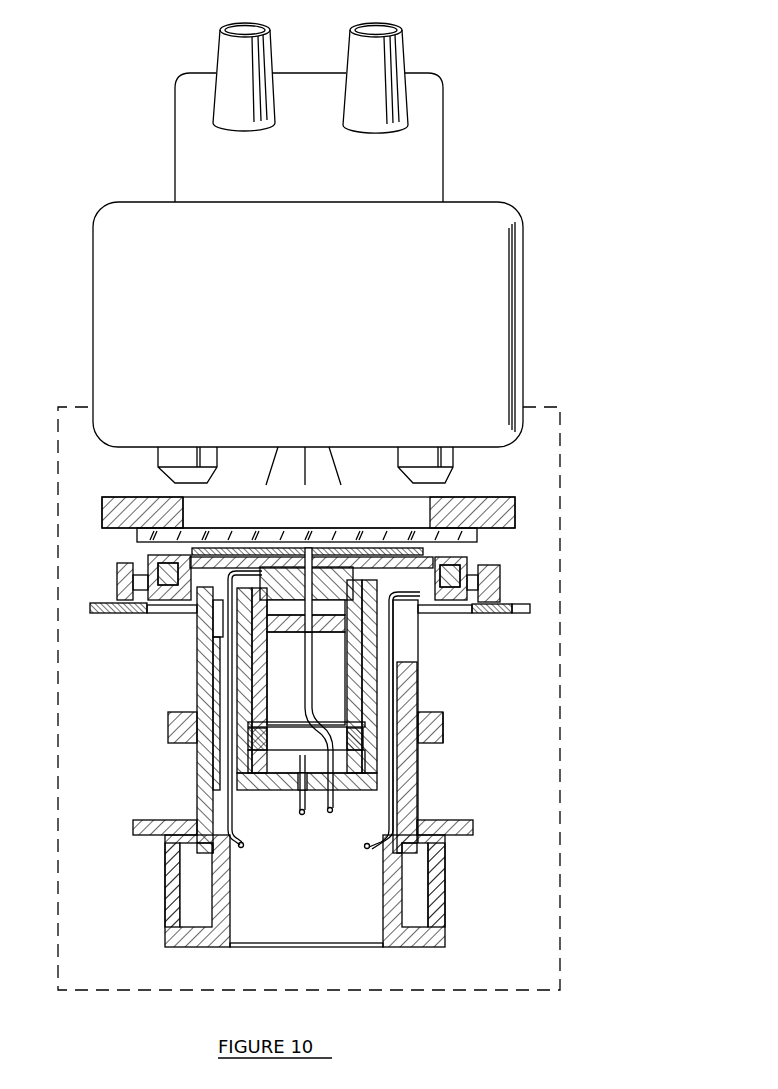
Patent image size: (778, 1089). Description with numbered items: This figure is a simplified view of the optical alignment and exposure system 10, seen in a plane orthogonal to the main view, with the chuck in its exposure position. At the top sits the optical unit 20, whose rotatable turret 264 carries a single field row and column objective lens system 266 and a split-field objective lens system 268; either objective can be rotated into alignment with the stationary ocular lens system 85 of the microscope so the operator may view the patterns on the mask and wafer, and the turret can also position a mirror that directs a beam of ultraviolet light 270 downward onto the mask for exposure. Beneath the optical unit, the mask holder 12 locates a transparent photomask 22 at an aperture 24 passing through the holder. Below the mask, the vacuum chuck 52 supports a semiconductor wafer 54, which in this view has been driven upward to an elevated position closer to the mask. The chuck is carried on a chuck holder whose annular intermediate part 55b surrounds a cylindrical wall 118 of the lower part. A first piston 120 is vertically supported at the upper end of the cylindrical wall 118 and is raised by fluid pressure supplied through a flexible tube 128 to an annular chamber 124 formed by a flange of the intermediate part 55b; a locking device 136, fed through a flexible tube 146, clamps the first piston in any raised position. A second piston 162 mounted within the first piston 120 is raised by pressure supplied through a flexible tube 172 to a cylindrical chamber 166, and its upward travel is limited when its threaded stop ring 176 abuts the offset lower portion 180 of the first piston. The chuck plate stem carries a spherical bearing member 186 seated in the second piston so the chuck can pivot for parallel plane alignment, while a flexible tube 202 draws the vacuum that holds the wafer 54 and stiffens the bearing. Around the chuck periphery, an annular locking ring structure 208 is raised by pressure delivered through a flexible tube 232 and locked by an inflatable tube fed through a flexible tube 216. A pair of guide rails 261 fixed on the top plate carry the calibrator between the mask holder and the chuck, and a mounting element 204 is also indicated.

The optical alignment and exposure system 10 is at (571, 409).
The mask holder 12 is at (101, 513).
The optical unit 20 is at (457, 77).
The photomask 22 is at (381, 533).
The aperture 24 is at (186, 515).
The vacuum chuck 52 is at (317, 560).
The semiconductor wafer 54 is at (245, 548).
The annular intermediate part 55b is at (170, 881).
The stationary ocular lens system 85 is at (438, 153).
The cylindrical wall 118 is at (222, 918).
The first piston 120 is at (197, 677).
The annular chamber 124 is at (422, 893).
The flexible tube 128 is at (431, 913).
The locking device 136 is at (436, 712).
The flexible tube 146 is at (444, 728).
The second piston 162 is at (264, 646).
The cylindrical chamber 166 is at (303, 693).
The flexible tube 172 is at (300, 814).
The stop ring 176 is at (253, 755).
The offset lower portion 180 is at (306, 722).
The bearing member 186 is at (311, 636).
The flexible tube 202 is at (328, 812).
The mounting flange plate 204 is at (108, 613).
The locking ring structure 208 is at (450, 553).
The flexible tube 216 is at (240, 848).
The flexible tube 232 is at (366, 850).
The guide rails 261 is at (116, 578).
The turret 264 is at (516, 315).
The single field row and column objective lens system 266 is at (452, 462).
The split-field objective lens system 268 is at (158, 465).
The beam of ultraviolet light 270 is at (333, 468).